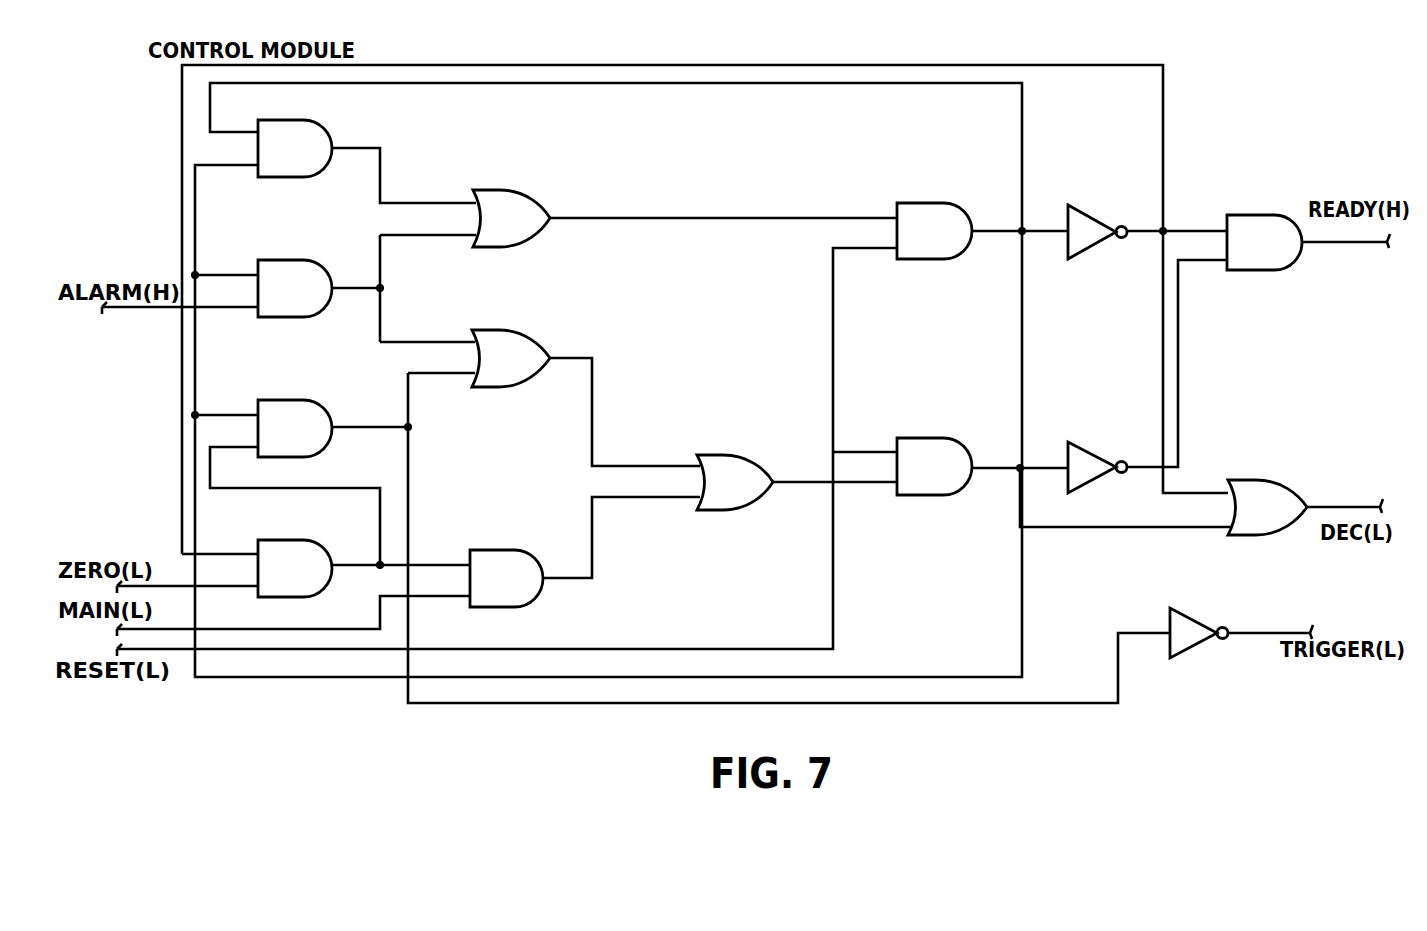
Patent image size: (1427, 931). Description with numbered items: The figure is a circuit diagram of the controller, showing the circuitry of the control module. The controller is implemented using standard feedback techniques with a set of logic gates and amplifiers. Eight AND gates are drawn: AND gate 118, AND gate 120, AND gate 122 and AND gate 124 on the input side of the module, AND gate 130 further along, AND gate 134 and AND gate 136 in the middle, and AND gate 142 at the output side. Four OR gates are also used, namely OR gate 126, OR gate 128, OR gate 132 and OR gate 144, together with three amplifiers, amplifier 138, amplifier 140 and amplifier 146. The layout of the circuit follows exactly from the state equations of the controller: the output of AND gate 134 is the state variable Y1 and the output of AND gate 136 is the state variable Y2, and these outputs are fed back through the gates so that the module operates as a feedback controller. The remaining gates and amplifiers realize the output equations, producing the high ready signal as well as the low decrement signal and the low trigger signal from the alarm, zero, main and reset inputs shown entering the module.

The AND gate 118 is at (320, 122).
The AND gate 120 is at (320, 262).
The AND gate 122 is at (318, 403).
The AND gate 124 is at (317, 541).
The OR gate 126 is at (528, 190).
The OR gate 128 is at (533, 334).
The AND gate 130 is at (530, 551).
The OR gate 132 is at (757, 460).
The AND gate 134 is at (955, 203).
The AND gate 136 is at (955, 438).
The amplifier 138 is at (1107, 222).
The amplifier 140 is at (1105, 452).
The AND gate 142 is at (1277, 213).
The OR gate 144 is at (1285, 478).
The amplifier 146 is at (1200, 625).